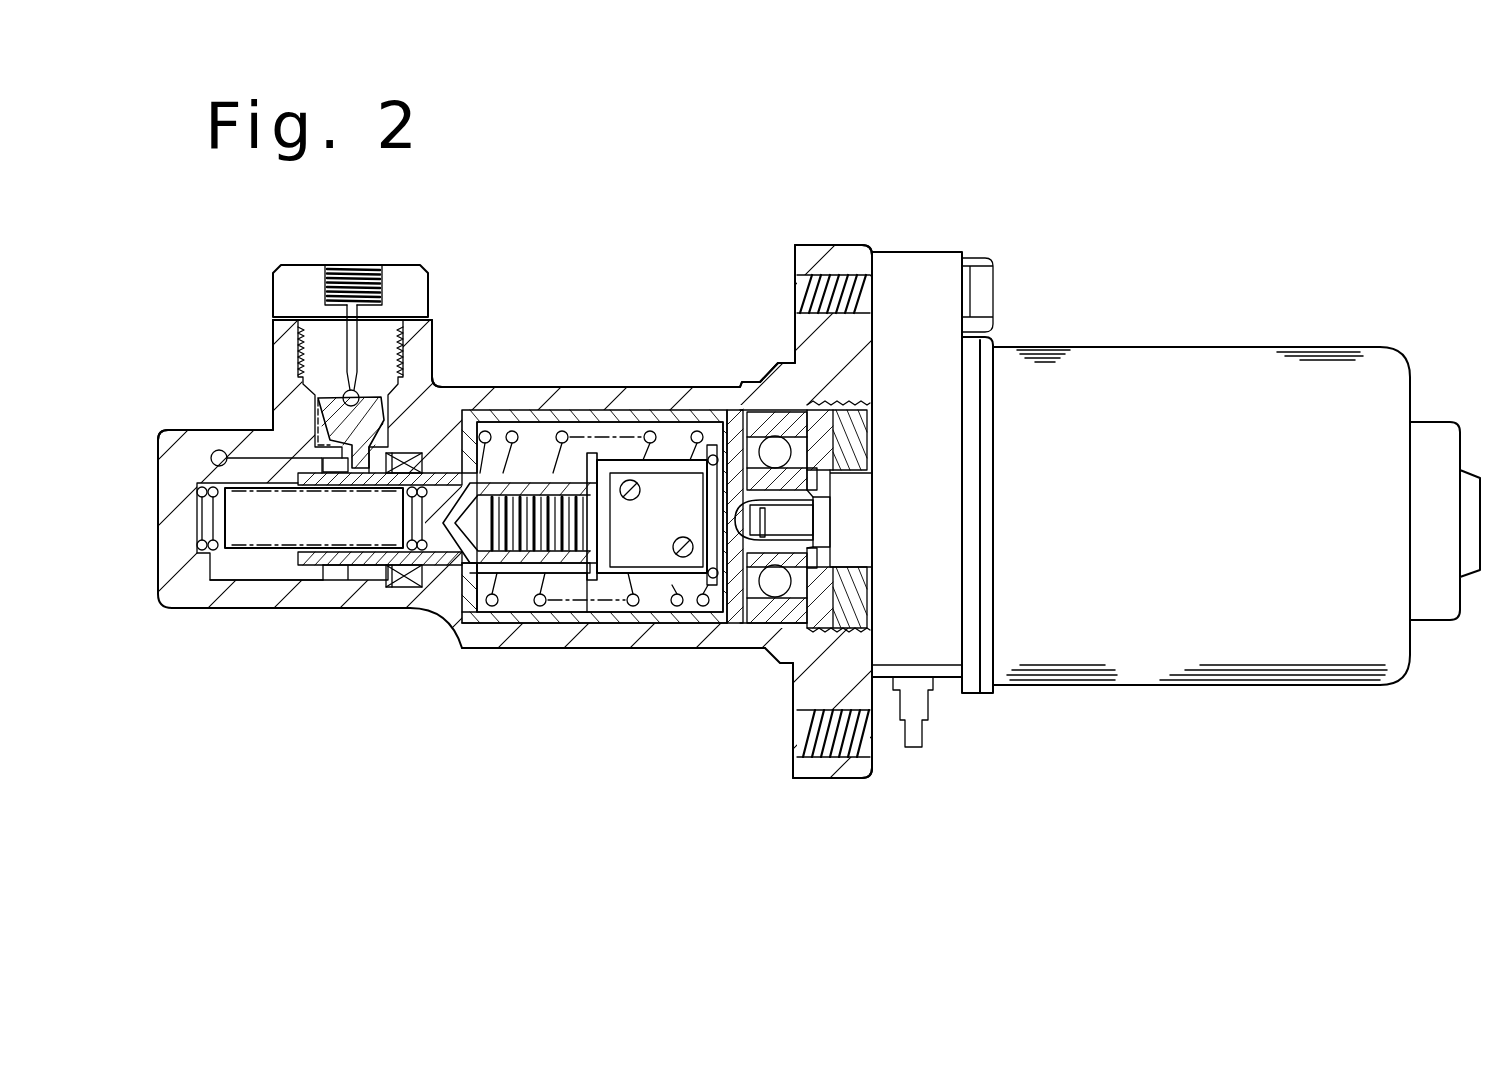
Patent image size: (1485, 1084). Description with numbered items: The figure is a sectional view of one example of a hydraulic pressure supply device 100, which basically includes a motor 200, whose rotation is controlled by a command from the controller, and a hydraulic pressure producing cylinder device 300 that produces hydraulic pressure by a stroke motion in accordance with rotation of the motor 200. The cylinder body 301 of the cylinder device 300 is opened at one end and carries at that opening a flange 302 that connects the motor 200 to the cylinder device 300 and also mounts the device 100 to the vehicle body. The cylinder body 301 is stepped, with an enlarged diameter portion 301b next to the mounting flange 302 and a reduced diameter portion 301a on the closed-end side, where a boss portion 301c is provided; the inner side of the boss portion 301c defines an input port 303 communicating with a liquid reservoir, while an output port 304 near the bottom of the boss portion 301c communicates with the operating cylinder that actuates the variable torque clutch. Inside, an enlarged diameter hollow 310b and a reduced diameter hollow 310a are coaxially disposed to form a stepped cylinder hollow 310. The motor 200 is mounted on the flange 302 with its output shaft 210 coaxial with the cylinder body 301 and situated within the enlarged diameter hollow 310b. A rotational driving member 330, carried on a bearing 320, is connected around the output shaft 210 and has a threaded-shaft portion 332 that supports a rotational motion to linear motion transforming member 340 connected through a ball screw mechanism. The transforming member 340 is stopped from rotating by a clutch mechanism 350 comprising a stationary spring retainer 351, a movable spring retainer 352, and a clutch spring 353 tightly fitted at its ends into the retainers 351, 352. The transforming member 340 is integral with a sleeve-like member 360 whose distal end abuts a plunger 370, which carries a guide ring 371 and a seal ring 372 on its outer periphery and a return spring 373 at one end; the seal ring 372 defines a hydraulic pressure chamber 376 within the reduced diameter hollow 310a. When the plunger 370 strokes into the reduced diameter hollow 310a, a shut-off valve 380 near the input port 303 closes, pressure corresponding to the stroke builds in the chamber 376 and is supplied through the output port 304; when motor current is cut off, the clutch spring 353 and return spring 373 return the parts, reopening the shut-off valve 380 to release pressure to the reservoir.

The hydraulic pressure supply device 100 is at (1057, 255).
The motor 200 is at (1127, 687).
The output shaft 210 is at (795, 522).
The hydraulic pressure producing cylinder device 300 is at (520, 648).
The cylinder body 301 is at (585, 402).
The reduced diameter portion 301a is at (255, 603).
The enlarged diameter portion 301b is at (612, 640).
The boss portion 301c is at (283, 363).
The flange 302 is at (808, 686).
The input port 303 is at (375, 292).
The output port 304 is at (217, 452).
The stepped cylinder hollow 310 is at (660, 428).
The reduced diameter hollow 310a is at (250, 574).
The enlarged diameter hollow 310b is at (530, 612).
The bearing 320 is at (775, 440).
The rotational driving member 330 is at (813, 490).
The threaded-shaft portion 332 is at (530, 503).
The rotational motion to linear motion transforming member 340 is at (633, 468).
The clutch mechanism 350 is at (690, 606).
The stationary spring retainer 351 is at (465, 608).
The movable spring retainer 352 is at (715, 588).
The clutch spring 353 is at (573, 602).
The sleeve-like member 360 is at (492, 486).
The plunger 370 is at (435, 555).
The guide ring 371 is at (438, 470).
The seal ring 372 is at (407, 588).
The return spring 373 is at (280, 546).
The hydraulic pressure chamber 376 is at (273, 473).
The shut-off valve 380 is at (345, 393).